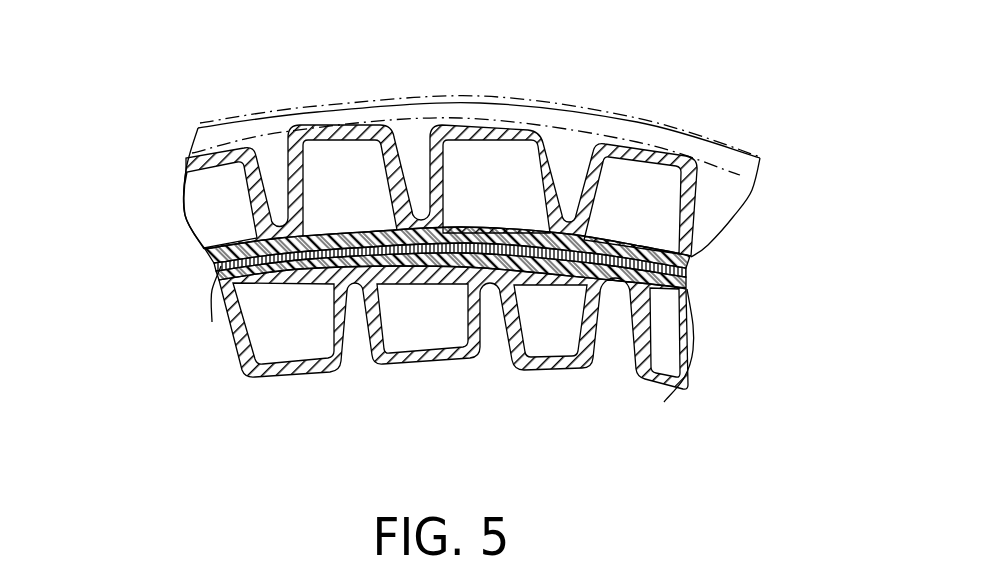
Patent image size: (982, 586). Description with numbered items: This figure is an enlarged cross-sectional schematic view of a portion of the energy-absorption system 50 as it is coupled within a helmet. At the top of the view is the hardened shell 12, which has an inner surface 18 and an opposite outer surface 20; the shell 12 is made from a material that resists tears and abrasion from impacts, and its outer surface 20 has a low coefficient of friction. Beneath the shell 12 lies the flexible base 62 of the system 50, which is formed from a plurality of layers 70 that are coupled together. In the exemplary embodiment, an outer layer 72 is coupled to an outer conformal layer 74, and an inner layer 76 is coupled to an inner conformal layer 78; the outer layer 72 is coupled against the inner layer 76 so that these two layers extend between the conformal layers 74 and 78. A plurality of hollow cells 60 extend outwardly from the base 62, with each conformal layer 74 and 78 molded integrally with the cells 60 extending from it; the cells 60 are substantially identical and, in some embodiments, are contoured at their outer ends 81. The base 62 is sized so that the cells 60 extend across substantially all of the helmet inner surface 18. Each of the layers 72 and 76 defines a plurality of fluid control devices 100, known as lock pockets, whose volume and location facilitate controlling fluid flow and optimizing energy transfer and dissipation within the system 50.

The shell 12 is at (556, 110).
The inner surface 18 is at (727, 170).
The outer surface 20 is at (641, 122).
The energy-absorption system 50 is at (207, 368).
The hollow cells 60 is at (455, 305).
The base 62 is at (700, 278).
The layers 70 is at (153, 338).
The outer layer 72 is at (212, 258).
The outer conformal layer 74 is at (186, 160).
The inner layer 76 is at (688, 289).
The inner conformal layer 78 is at (456, 353).
The outer ends 81 is at (544, 368).
The fluid control devices 100 is at (432, 248).